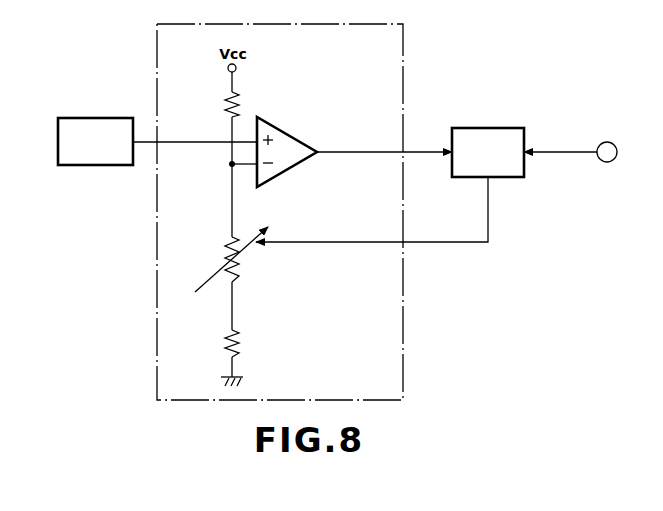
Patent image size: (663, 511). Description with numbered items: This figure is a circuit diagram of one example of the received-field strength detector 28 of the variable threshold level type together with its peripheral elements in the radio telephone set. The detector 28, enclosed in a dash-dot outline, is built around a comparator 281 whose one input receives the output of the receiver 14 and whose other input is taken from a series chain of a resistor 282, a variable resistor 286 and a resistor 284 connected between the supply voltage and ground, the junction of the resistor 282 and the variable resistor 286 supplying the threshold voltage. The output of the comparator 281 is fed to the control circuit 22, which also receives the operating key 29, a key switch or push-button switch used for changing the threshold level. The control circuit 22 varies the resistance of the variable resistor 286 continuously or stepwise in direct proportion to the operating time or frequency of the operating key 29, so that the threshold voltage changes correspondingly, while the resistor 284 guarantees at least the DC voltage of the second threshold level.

The receiver 14 is at (95, 118).
The control circuit 22 is at (487, 128).
The received-field strength detector 28 is at (406, 353).
The operating key 29 is at (607, 142).
The comparator 281 is at (292, 130).
The resistor 282 is at (241, 100).
The resistor 284 is at (244, 340).
The variable resistor 286 is at (244, 268).